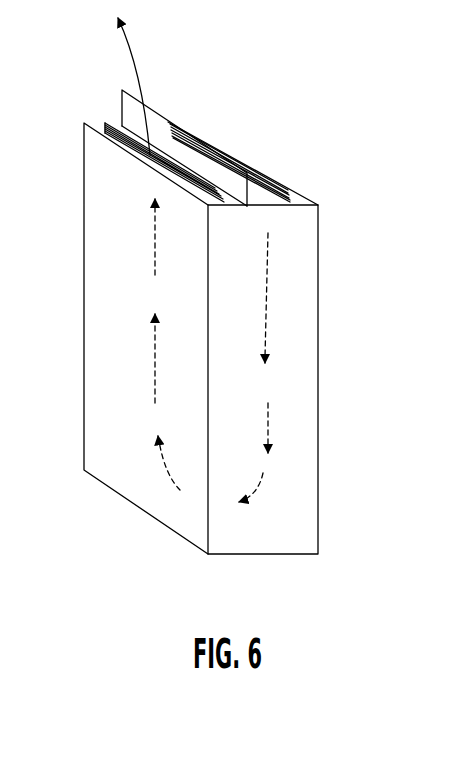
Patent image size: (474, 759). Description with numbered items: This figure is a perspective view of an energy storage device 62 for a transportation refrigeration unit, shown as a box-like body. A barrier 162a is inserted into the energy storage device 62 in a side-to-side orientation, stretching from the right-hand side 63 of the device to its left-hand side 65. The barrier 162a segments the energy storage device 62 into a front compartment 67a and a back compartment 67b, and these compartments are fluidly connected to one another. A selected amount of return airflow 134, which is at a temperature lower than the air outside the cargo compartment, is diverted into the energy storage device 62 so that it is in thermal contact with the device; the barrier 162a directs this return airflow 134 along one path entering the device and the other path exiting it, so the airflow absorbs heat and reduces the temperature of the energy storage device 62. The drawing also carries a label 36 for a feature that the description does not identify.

The energy storage device 62 is at (125, 483).
The right-hand side 63 is at (267, 206).
The left-hand side 65 is at (100, 120).
The front compartment 67a is at (105, 275).
The back compartment 67b is at (303, 185).
The return airflow 134 is at (255, 153).
The barrier 162a is at (187, 152).
The enclosure wall 36 is at (0, 530).